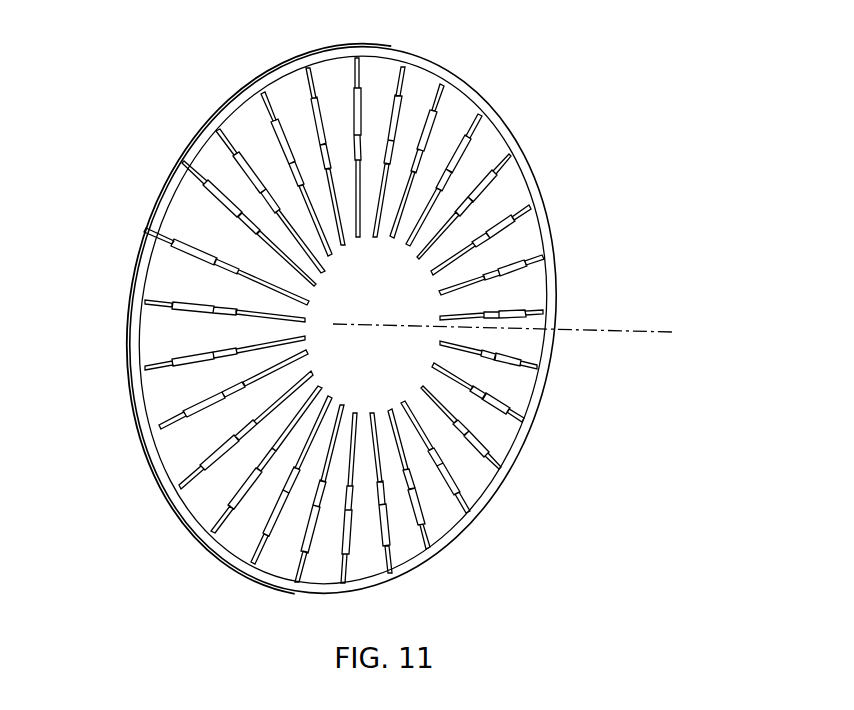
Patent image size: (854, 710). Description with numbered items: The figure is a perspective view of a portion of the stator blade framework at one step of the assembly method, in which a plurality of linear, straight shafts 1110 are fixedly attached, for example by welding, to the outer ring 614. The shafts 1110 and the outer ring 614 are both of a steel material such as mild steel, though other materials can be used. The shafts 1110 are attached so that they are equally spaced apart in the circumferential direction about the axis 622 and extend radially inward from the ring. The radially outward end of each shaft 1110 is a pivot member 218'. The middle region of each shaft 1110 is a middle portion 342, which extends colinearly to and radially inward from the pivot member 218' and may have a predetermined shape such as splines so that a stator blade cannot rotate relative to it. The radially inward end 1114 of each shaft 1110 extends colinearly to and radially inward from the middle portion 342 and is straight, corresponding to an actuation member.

The outer ring 614 is at (551, 357).
The pivot member 218' is at (237, 301).
The axis 622 is at (648, 329).
The middle portion 342 is at (247, 172).
The radially inward end 1114 is at (323, 277).
The shaft 1110 is at (486, 187).